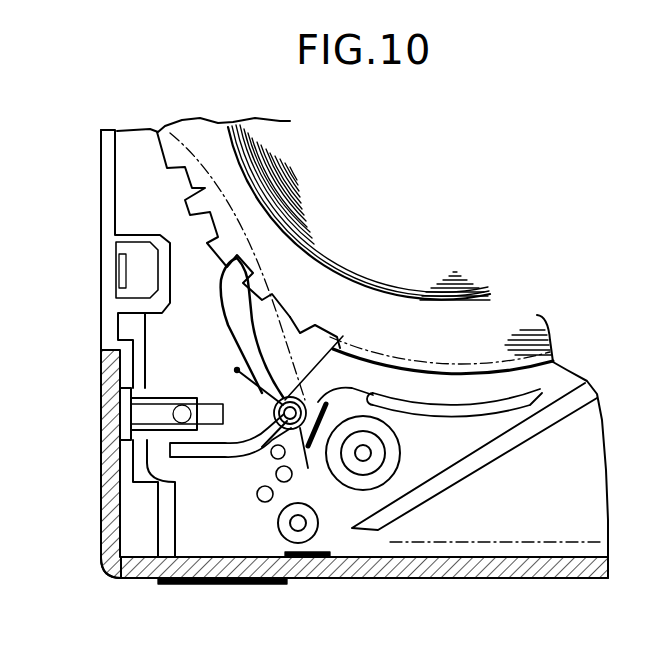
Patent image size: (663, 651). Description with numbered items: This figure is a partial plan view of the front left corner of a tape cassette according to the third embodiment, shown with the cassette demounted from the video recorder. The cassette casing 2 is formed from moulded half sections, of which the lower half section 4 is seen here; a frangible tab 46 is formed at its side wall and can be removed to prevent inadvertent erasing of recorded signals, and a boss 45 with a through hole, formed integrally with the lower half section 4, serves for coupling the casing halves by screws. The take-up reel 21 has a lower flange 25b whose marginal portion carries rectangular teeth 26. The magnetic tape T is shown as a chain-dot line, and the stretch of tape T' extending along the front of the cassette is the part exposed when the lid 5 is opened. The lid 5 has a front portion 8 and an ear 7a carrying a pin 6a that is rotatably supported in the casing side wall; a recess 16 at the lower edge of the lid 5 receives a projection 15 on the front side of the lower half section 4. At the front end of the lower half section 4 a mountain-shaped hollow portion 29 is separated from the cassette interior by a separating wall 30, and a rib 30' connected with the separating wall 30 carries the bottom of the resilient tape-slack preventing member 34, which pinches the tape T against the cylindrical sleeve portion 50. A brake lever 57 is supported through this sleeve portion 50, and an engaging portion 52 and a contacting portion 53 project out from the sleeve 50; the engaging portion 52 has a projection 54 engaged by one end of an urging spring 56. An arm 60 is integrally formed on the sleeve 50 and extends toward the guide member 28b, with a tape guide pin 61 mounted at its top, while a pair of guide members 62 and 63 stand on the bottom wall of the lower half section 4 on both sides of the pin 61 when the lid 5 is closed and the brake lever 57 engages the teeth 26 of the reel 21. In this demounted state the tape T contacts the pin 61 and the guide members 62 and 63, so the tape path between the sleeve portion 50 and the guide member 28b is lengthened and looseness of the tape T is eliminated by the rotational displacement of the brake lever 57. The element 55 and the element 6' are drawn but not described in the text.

The cassette casing 2 is at (77, 167).
The lower half section 4 is at (107, 210).
The frangible tab 46 is at (137, 272).
The lower flange 25b is at (200, 126).
The rectangular teeth 26 is at (213, 247).
The magnetic tape T is at (237, 266).
The take-up reel 21 is at (392, 211).
The engaging portion 52 is at (223, 303).
The projection 54 is at (297, 322).
The lever arm 55 is at (343, 337).
The tape-slack preventing member 34 is at (375, 365).
The rib 30' is at (454, 368).
The cylindrical sleeve portion 50 is at (302, 402).
The urging spring 56 is at (240, 371).
The pin 6a is at (120, 413).
The bolt hole 6' is at (175, 386).
The boss 45 is at (395, 400).
The mountain-shaped hollow portion 29 is at (558, 484).
The contacting portion 53 is at (206, 452).
The brake lever 57 is at (223, 463).
The guide member 62 is at (272, 454).
The guide member 63 is at (260, 499).
The tape guide pin 61 is at (283, 483).
The arm 60 is at (310, 470).
The separating wall 30 is at (474, 456).
The ear 7a is at (113, 493).
The front portion 8 is at (420, 572).
The recess 16 is at (153, 588).
The projection 15 is at (210, 584).
The guide member 28b is at (303, 540).
The lid 5 is at (510, 584).
The magnetic tape T' is at (495, 538).